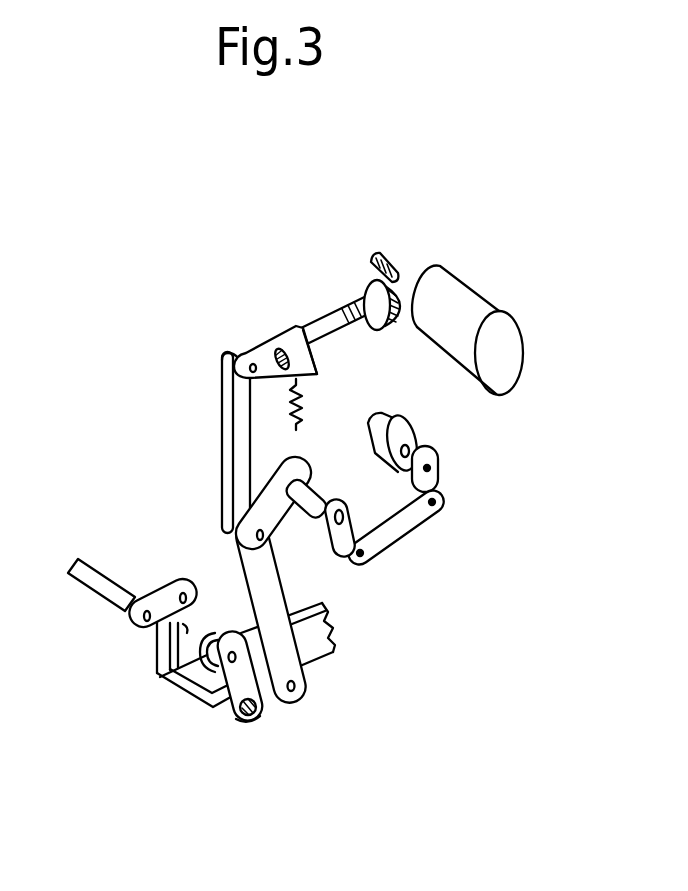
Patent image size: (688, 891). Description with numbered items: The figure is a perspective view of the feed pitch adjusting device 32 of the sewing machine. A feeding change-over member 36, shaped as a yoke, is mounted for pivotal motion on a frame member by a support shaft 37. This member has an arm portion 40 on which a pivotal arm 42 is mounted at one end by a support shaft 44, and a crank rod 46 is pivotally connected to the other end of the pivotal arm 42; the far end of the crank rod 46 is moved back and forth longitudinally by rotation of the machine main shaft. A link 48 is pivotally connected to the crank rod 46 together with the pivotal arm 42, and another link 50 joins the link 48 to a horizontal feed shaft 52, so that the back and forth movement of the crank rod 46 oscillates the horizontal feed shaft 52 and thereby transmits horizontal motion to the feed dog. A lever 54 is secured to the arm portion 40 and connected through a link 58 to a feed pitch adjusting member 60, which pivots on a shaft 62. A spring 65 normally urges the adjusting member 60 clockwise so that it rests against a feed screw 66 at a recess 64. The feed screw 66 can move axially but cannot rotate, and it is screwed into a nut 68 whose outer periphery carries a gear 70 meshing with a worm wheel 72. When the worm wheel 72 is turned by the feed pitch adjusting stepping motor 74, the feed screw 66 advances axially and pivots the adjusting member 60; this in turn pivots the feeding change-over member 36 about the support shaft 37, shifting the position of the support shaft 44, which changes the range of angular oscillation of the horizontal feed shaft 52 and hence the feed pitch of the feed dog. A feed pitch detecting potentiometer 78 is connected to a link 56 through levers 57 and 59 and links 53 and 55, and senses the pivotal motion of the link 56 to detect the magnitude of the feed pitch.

The feed pitch adjusting device 32 is at (185, 291).
The feeding change-over member 36 is at (185, 690).
The support shaft 37 is at (252, 722).
The arm portion 40 is at (229, 713).
The pivotal arm 42 is at (160, 677).
The support shaft 44 is at (265, 712).
The crank rod 46 is at (312, 641).
The link 48 is at (170, 643).
The link 50 is at (169, 582).
The horizontal feed shaft 52 is at (95, 594).
The link 53 is at (294, 512).
The lever 54 is at (282, 704).
The link 55 is at (407, 520).
The link 56 is at (286, 632).
The lever 57 is at (340, 492).
The link 58 is at (238, 432).
The lever 59 is at (435, 474).
The feed pitch adjusting member 60 is at (270, 340).
The shaft 62 is at (248, 352).
The recess 64 is at (310, 358).
The spring 65 is at (297, 408).
The feed screw 66 is at (320, 325).
The nut 68 is at (366, 290).
The gear 70 is at (394, 328).
The worm wheel 72 is at (399, 262).
The feed pitch adjusting stepping motor 74 is at (455, 292).
The feed pitch detecting potentiometer 78 is at (406, 432).